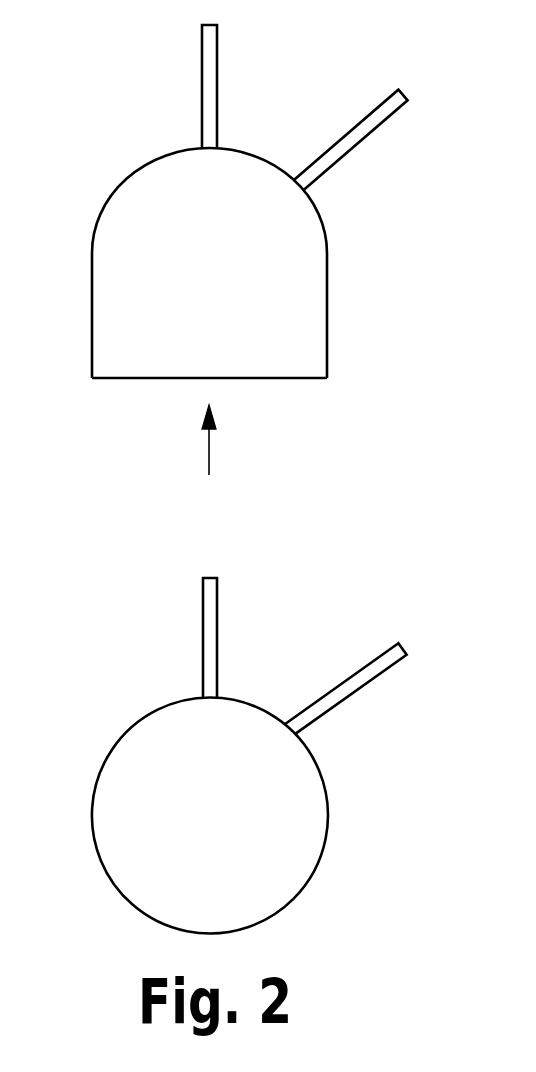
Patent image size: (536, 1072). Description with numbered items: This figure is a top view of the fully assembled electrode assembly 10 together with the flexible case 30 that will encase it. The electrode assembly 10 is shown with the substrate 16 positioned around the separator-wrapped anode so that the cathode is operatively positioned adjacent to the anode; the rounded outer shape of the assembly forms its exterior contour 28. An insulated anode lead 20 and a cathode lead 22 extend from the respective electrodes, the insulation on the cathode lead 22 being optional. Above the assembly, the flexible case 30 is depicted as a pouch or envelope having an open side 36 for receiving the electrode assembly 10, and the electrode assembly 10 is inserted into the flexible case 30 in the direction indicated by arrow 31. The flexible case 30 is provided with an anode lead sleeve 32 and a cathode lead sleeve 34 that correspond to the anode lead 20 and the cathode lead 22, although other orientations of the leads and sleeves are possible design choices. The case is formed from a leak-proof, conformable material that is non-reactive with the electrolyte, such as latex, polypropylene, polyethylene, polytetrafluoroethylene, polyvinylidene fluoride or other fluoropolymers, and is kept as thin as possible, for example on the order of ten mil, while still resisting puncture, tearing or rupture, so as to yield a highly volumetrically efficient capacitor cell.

The electrode assembly 10 is at (368, 597).
The substrate 16 is at (92, 732).
The anode lead 20 is at (215, 672).
The cathode lead 22 is at (373, 682).
The exterior contour 28 is at (313, 872).
The flexible case 30 is at (328, 322).
The arrow 31 is at (207, 437).
The anode lead sleeve 32 is at (215, 120).
The cathode lead sleeve 34 is at (375, 132).
The open side 36 is at (280, 380).